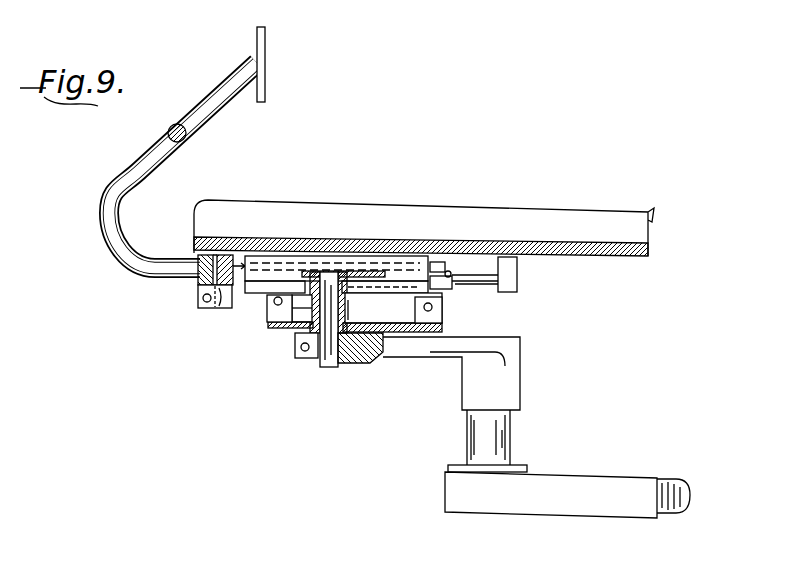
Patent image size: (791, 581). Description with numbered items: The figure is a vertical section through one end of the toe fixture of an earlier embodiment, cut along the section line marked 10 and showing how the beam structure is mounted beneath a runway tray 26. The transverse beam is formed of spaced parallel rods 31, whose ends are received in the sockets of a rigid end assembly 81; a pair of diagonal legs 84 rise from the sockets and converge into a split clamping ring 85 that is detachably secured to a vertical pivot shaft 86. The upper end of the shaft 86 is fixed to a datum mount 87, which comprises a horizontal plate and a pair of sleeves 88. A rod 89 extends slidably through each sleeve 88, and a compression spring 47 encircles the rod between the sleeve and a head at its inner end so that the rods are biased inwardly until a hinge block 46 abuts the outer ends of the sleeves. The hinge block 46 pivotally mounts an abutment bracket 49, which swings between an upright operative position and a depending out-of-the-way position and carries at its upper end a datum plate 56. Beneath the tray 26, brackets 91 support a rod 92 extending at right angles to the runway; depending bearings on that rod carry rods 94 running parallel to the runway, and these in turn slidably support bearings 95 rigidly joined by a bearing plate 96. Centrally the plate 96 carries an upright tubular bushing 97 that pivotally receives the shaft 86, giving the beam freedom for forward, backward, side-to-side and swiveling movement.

The section line 10- 10 is at (316, 27).
The runway tray 26 is at (591, 253).
The rod 31 is at (667, 508).
The hinge block 46 is at (220, 309).
The compression spring 47 is at (445, 281).
The abutment bracket 49 is at (112, 186).
The datum plate 56 is at (266, 90).
The end assembly 81 is at (436, 501).
The diagonal leg 84 is at (427, 352).
The split clamping ring 85 is at (305, 358).
The vertical pivot shaft 86 is at (328, 360).
The datum mount 87 is at (343, 270).
The sleeve 88 is at (258, 263).
The rod 89 is at (446, 268).
The bracket 91 is at (510, 271).
The rod 92 is at (490, 273).
The rod 94 is at (274, 301).
The bracket or bearing 95 is at (275, 312).
The bearing plate 96 is at (277, 328).
The tubular bushing 97 is at (349, 306).